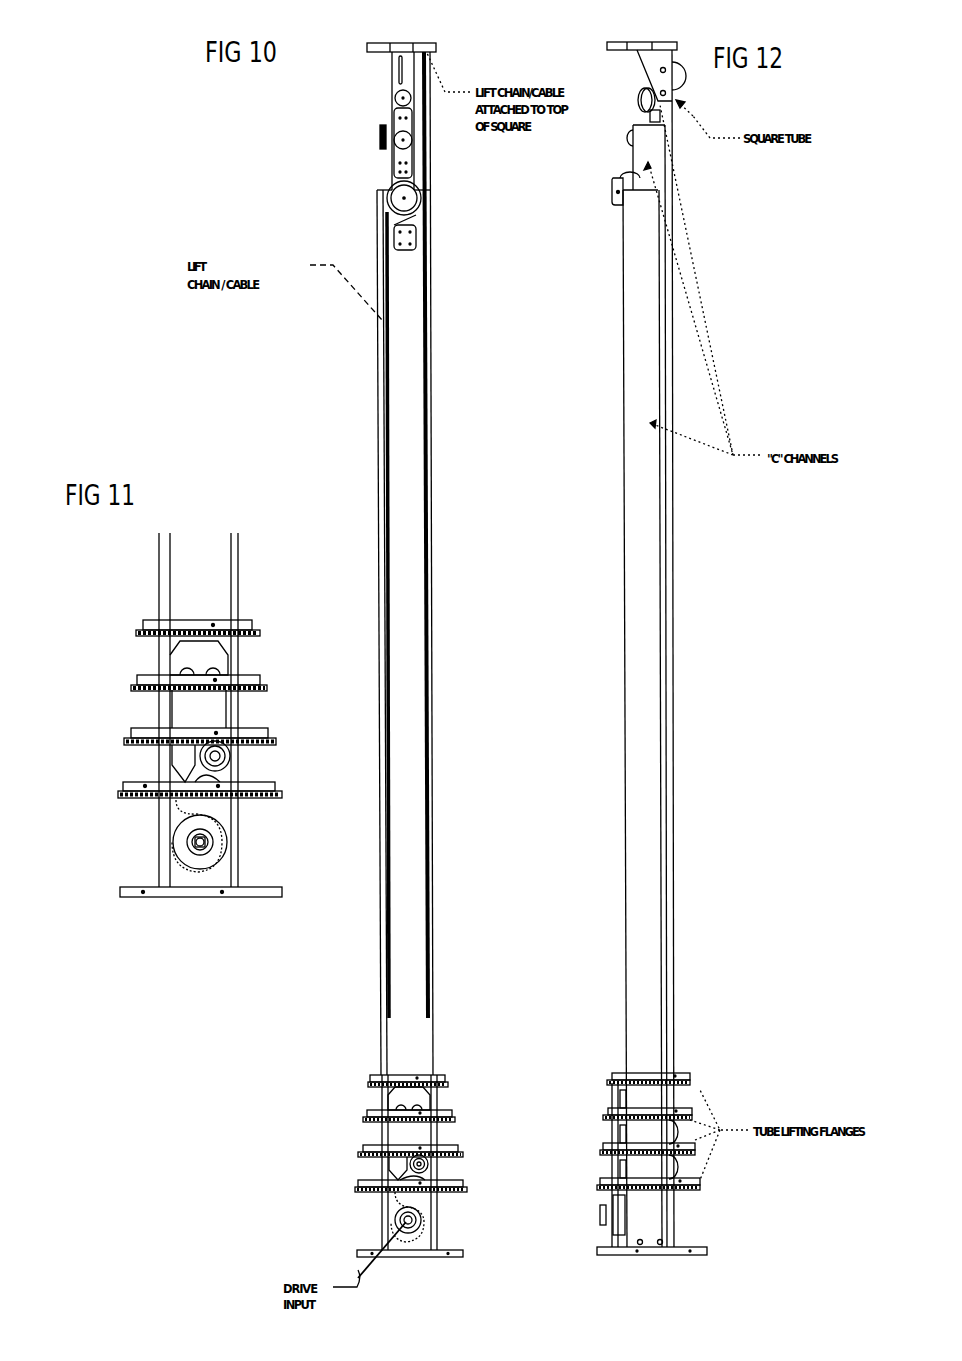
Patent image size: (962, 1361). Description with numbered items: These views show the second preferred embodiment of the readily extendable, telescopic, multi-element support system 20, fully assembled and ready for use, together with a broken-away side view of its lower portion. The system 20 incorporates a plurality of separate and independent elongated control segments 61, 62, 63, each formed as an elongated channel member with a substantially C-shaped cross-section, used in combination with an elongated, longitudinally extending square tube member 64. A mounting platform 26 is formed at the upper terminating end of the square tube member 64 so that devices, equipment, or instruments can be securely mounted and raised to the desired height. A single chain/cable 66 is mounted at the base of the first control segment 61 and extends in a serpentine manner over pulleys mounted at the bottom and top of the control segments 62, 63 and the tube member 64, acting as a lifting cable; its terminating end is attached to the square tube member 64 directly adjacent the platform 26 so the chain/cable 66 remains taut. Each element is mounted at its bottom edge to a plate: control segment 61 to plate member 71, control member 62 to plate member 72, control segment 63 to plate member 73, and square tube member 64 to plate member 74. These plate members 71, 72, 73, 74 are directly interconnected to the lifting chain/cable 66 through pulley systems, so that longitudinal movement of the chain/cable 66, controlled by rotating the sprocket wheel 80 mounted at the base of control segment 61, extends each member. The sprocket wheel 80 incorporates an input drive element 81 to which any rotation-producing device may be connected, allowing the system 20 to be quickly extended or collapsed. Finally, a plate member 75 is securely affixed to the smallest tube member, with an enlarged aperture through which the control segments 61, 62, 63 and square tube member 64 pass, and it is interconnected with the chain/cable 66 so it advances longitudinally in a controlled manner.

In FIG. 10, the multi-element support system 20 is at (372, 350).
In FIG. 10, the mounting platform 26 is at (367, 51).
In FIG. 12, the first control segment 61 is at (642, 480).
In FIG. 12, the control segment 62 is at (662, 602).
In FIG. 12, the control segment 63 is at (670, 523).
In FIG. 10, the square tube member 64 is at (410, 993).
In FIG. 10, the chain/cable 66 is at (430, 282).
In FIG. 11, the chain/cable 66 is at (180, 797).
In FIG. 10, the plate member 71 is at (450, 1258).
In FIG. 11, the plate member 71 is at (120, 892).
In FIG. 12, the plate member 71 is at (675, 1255).
In FIG. 10, the plate member 72 is at (447, 1182).
In FIG. 11, the plate member 72 is at (122, 786).
In FIG. 12, the plate member 72 is at (690, 1190).
In FIG. 10, the plate member 73 is at (444, 1147).
In FIG. 11, the plate member 73 is at (130, 732).
In FIG. 12, the plate member 73 is at (690, 1150).
In FIG. 10, the plate member 74 is at (438, 1112).
In FIG. 11, the plate member 74 is at (136, 678).
In FIG. 12, the plate member 74 is at (685, 1107).
In FIG. 10, the plate member 75 is at (370, 1078).
In FIG. 11, the plate member 75 is at (143, 629).
In FIG. 12, the plate member 75 is at (650, 1070).
In FIG. 10, the sprocket wheel 80 is at (410, 1225).
In FIG. 11, the sprocket wheel 80 is at (200, 852).
In FIG. 11, the input drive element 81 is at (203, 847).